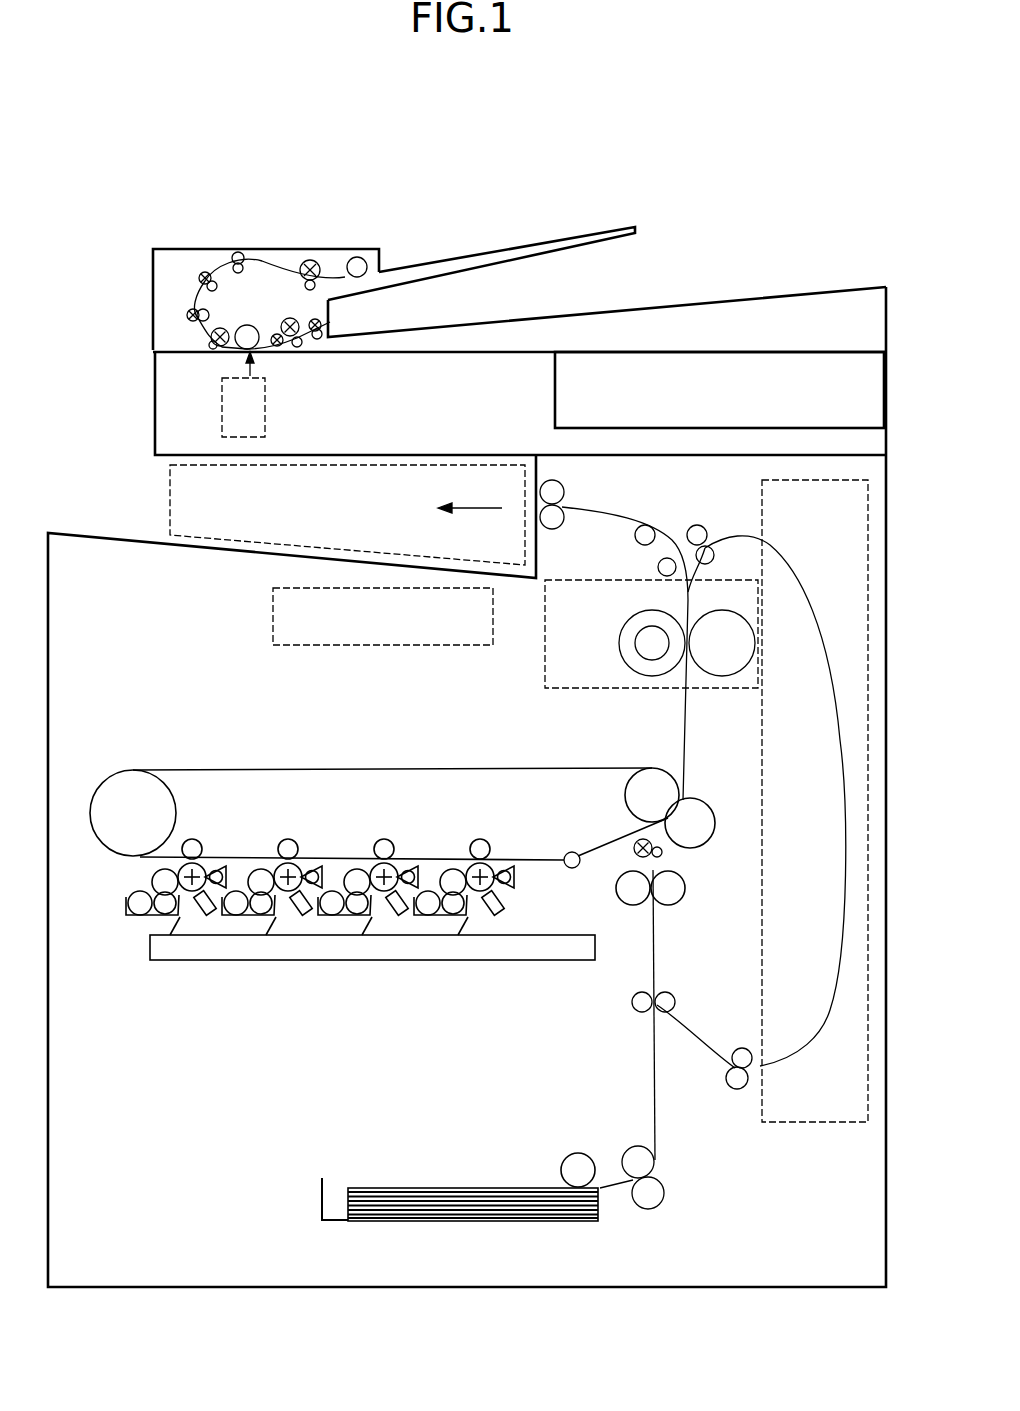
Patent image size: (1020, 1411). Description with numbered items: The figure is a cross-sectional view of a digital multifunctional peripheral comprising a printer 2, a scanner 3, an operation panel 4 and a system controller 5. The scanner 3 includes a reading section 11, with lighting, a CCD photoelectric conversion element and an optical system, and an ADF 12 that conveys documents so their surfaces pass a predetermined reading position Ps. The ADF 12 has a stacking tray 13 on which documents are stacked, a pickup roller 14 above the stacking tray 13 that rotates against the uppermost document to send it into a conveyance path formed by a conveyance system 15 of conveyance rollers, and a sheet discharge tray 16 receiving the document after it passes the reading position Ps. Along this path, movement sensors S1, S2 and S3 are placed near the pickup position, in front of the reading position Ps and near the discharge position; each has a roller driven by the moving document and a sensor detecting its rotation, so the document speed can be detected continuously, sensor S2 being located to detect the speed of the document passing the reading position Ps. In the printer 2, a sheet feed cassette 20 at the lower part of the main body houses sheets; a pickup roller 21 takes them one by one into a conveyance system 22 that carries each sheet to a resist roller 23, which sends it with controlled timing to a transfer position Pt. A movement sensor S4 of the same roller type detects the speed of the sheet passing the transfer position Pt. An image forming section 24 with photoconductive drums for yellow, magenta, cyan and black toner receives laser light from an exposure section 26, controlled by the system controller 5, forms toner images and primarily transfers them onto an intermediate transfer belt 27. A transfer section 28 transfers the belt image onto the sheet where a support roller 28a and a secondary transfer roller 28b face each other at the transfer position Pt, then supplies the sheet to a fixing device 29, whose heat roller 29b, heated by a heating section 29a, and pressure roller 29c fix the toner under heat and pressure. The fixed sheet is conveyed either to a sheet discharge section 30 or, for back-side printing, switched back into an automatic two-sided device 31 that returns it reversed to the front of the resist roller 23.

The printer 2 is at (55, 693).
The scanner 3 is at (158, 360).
The operation panel 4 is at (886, 390).
The system controller 5 is at (273, 617).
The reading section 11 is at (222, 405).
The ADF 12 is at (239, 258).
The stacking tray 13 is at (486, 252).
The pickup roller 14 is at (357, 256).
The conveyance system 15 is at (258, 252).
The sheet discharge tray 16 is at (515, 320).
The sheet feed cassette 20 is at (322, 1195).
The pickup roller 21 is at (561, 1167).
The conveyance system 22 is at (652, 1058).
The resist roller 23 is at (632, 906).
The image forming section 24 is at (513, 838).
The exposure section 26 is at (193, 962).
The intermediate transfer belt 27 is at (432, 768).
The transfer section 28 is at (688, 803).
The support roller 28a is at (657, 768).
The secondary transfer roller 28b is at (696, 846).
The fixing device 29 is at (651, 641).
The heating section 29a is at (652, 640).
The heat roller 29b is at (646, 678).
The pressure roller 29c is at (722, 678).
The sheet discharge section 30 is at (170, 498).
The automatic two-sided device 31 is at (868, 565).
The movement sensor S1 is at (310, 259).
The movement sensor S2 is at (195, 327).
The movement sensor S3 is at (287, 319).
The movement sensor S4 is at (634, 854).
The reading position Ps is at (256, 378).
The transfer position Pt is at (676, 892).